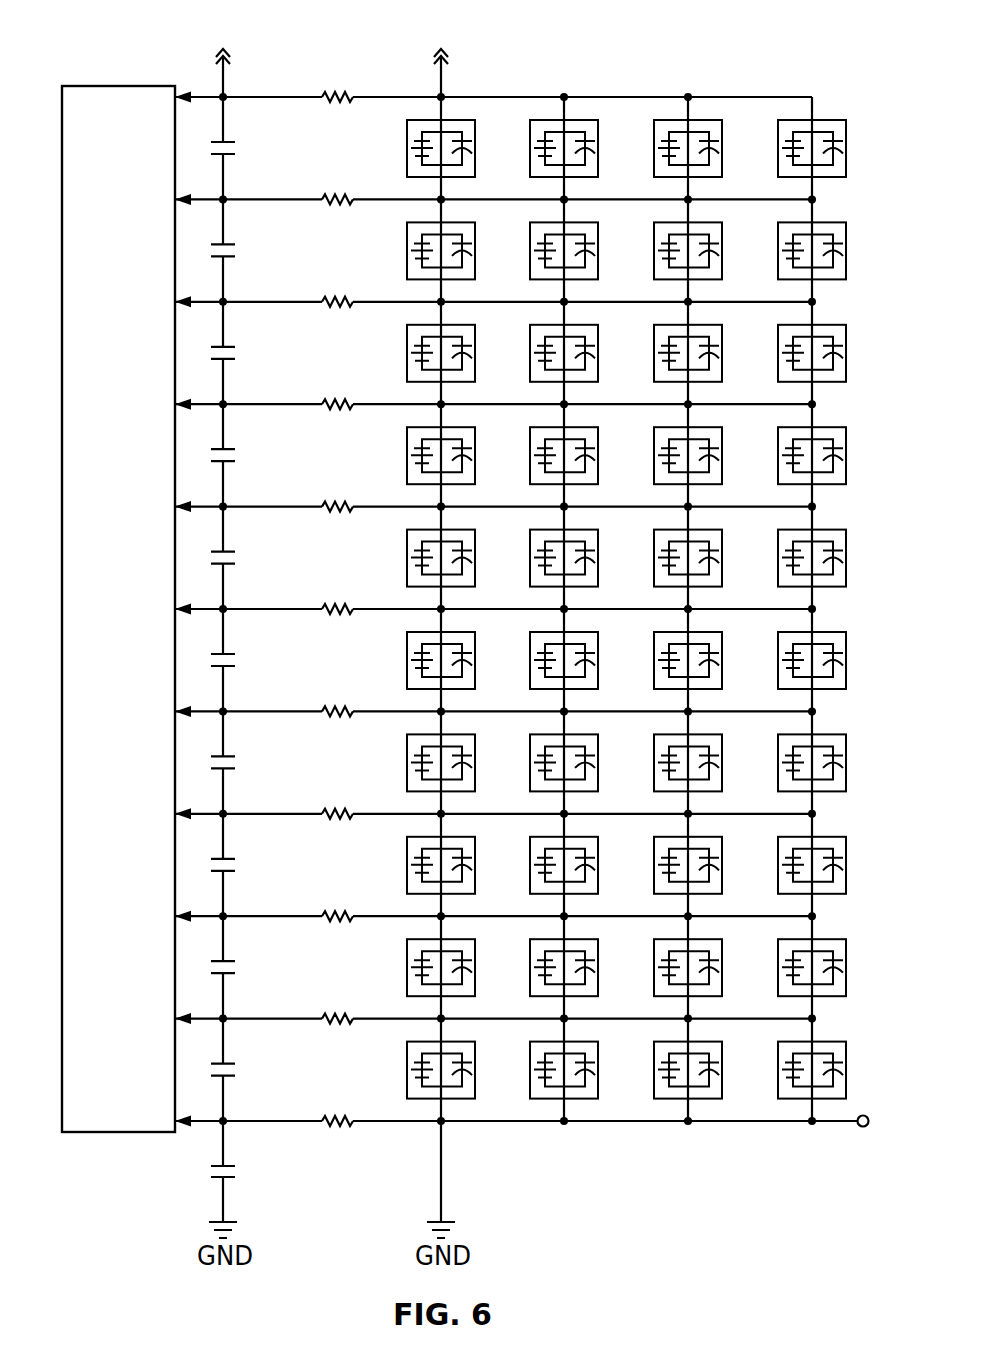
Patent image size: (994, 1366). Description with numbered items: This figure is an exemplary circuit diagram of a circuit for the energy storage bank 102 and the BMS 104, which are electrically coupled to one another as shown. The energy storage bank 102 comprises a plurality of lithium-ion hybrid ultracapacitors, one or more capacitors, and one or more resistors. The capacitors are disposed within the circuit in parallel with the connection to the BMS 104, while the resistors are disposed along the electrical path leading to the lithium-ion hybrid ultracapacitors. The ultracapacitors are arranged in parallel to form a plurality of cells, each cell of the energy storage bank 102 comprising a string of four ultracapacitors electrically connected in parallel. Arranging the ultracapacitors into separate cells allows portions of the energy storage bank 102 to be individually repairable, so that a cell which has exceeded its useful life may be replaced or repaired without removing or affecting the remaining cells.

The energy storage bank 102 is at (624, 60).
The BMS 104 is at (118, 86).